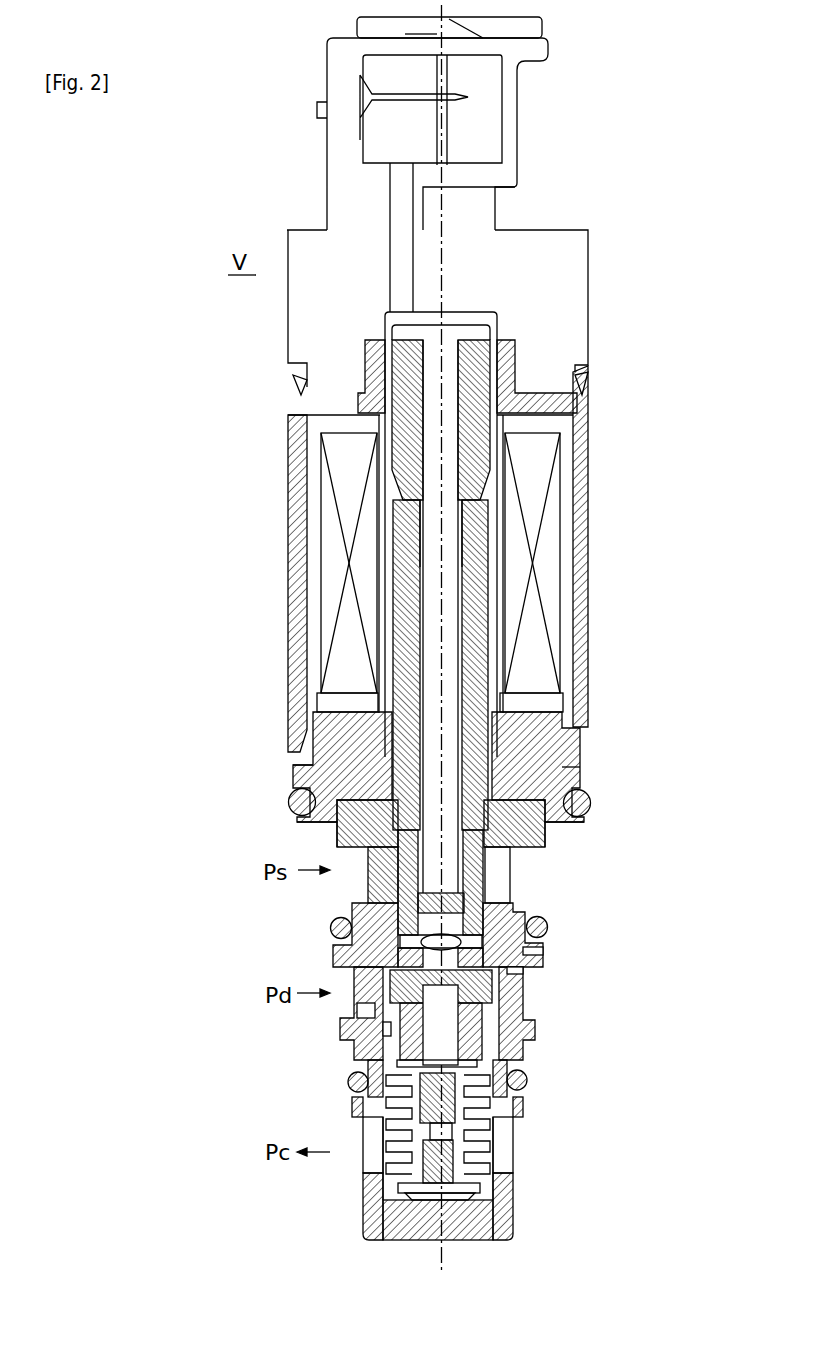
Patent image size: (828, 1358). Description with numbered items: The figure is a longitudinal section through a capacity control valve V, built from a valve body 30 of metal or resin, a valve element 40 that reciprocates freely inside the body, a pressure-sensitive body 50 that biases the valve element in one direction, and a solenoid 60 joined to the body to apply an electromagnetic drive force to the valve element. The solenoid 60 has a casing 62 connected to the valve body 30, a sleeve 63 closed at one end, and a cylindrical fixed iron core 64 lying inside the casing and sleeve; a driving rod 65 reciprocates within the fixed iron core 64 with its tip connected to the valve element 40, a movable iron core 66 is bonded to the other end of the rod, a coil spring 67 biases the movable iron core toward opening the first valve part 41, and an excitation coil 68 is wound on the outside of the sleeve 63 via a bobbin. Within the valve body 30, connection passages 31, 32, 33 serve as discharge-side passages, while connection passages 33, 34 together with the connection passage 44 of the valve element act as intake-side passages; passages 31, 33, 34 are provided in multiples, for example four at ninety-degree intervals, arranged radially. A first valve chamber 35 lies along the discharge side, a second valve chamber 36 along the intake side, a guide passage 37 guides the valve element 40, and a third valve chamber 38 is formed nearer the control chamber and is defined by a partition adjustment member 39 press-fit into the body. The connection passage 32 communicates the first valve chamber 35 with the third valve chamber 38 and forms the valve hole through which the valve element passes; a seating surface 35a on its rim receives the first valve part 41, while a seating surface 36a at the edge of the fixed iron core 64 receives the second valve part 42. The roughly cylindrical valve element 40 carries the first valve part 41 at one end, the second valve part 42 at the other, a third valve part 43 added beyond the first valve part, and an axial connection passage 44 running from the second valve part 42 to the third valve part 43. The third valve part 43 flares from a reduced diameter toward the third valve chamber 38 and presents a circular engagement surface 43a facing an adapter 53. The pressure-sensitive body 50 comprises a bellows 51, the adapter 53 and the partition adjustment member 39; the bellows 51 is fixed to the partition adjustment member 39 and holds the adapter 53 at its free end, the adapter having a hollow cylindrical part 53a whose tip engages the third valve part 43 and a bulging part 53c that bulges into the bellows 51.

The valve body 30 is at (540, 897).
The connection passage 31 is at (375, 1005).
The connection passage 32 is at (385, 1050).
The connection passage 33 is at (360, 1140).
The connection passage 34 is at (367, 897).
The first valve chamber 35 is at (370, 985).
The seating surface 35a is at (385, 1030).
The second valve chamber 36 is at (367, 858).
The seating surface 36a is at (397, 833).
The guide passage 37 is at (398, 958).
The third valve chamber 38 is at (390, 1147).
The partition adjustment member 39 is at (393, 1207).
The valve element 40 is at (485, 952).
The first valve part 41 is at (458, 990).
The second valve part 42 is at (482, 868).
The third valve part 43 is at (470, 1030).
The engagement surface 43a is at (470, 1055).
The connection passage 44 is at (470, 972).
The pressure-sensitive body 50 is at (492, 1135).
The bellows 51 is at (480, 1185).
The adapter 53 is at (455, 1100).
The hollow cylindrical part 53a is at (523, 1075).
The bulging part 53c is at (455, 1122).
The solenoid 60 is at (595, 484).
The casing 62 is at (527, 767).
The sleeve 63 is at (493, 318).
The fixed iron core 64 is at (472, 738).
The driving rod 65 is at (445, 612).
The movable iron core 66 is at (560, 413).
The coil spring 67 is at (467, 540).
The excitation coil 68 is at (530, 662).